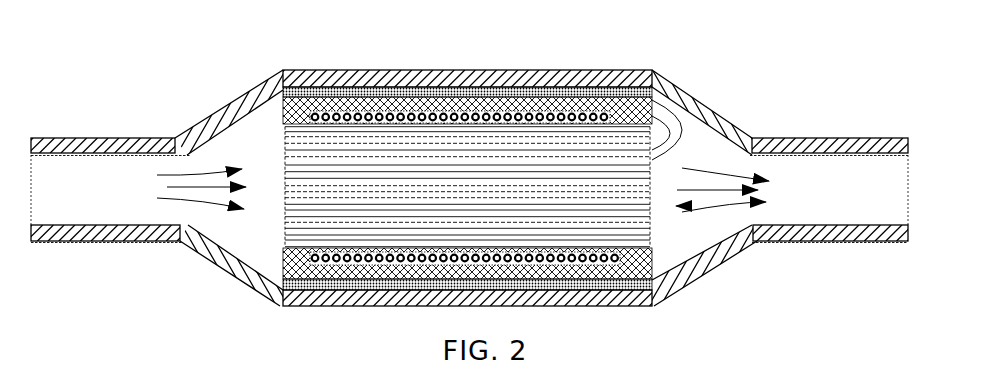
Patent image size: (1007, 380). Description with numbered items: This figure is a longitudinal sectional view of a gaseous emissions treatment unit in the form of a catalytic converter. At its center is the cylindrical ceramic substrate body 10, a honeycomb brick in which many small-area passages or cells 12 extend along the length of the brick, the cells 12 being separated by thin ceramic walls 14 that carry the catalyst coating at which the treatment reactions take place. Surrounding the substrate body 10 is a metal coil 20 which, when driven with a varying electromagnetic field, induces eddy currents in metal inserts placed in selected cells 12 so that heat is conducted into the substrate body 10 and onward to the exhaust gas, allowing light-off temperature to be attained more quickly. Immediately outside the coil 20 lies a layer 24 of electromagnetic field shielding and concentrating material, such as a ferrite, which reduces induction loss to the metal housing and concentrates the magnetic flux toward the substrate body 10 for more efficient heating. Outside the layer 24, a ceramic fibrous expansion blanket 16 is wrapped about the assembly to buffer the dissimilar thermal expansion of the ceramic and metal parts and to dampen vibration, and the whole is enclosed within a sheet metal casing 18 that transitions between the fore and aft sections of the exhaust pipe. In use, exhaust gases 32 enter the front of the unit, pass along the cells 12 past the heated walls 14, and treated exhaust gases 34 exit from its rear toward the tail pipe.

The substrate body 10 is at (475, 165).
The cells 12 is at (487, 144).
The walls 14 is at (329, 156).
The expansion blanket 16 is at (488, 86).
The casing 18 is at (427, 85).
The metal coil 20 is at (538, 95).
The layer of electromagnetic field shielding/concentrating material 24 is at (383, 92).
The exhaust gases 32 is at (203, 188).
The treated exhaust gases 34 is at (742, 188).